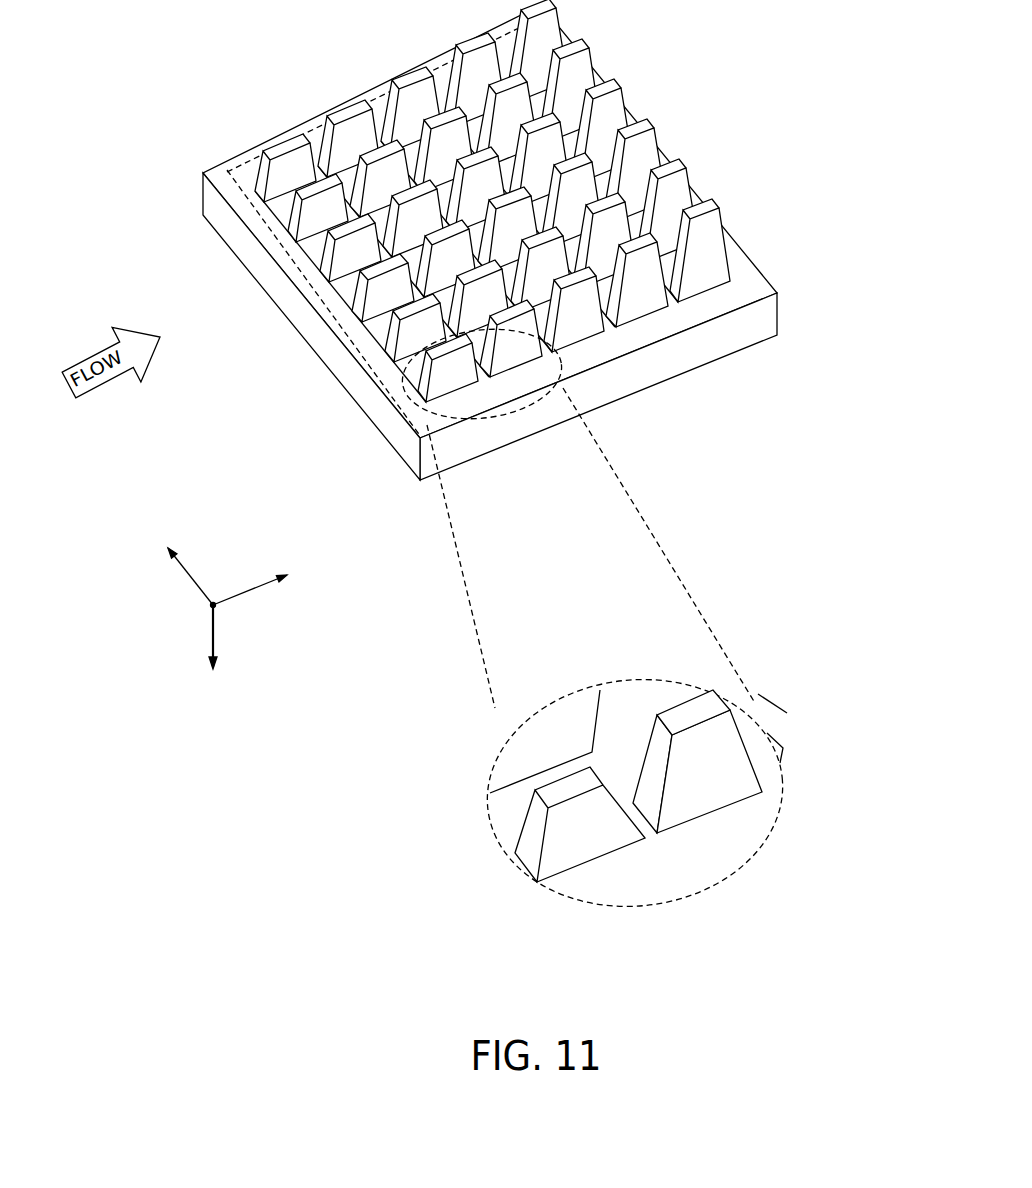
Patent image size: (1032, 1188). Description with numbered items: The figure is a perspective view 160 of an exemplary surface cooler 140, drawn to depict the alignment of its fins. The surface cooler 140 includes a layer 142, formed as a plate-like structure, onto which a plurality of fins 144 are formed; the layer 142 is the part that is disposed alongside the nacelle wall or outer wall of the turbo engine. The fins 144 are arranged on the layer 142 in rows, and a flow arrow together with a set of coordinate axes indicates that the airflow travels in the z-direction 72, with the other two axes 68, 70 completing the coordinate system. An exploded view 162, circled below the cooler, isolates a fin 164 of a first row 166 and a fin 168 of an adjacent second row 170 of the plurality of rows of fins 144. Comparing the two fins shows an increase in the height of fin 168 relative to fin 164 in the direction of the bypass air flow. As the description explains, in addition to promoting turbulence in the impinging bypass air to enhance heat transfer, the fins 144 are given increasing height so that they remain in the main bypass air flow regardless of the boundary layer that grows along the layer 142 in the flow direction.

The surface cooler 140 is at (713, 389).
The layer 142 is at (290, 298).
The fins 144 is at (640, 120).
The perspective view 160 is at (514, 449).
The exploded view 162 is at (699, 685).
The fin of a first row 164 is at (568, 850).
The first row 166 is at (480, 427).
The fin of a second row 168 is at (723, 787).
The second row 170 is at (543, 387).
The X axis 68 is at (192, 578).
The Y axis 70 is at (217, 627).
The z-direction 72 is at (253, 590).